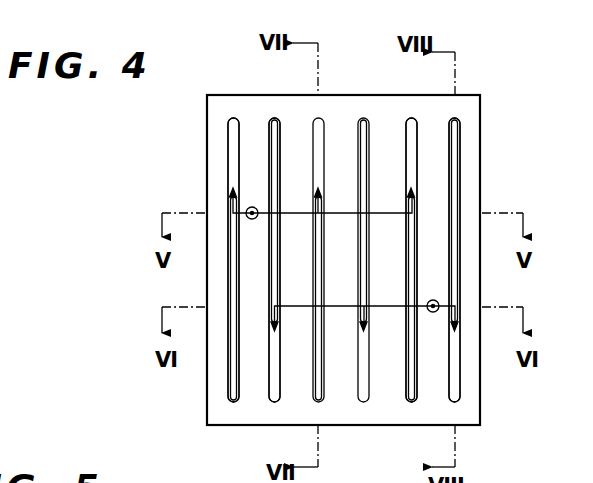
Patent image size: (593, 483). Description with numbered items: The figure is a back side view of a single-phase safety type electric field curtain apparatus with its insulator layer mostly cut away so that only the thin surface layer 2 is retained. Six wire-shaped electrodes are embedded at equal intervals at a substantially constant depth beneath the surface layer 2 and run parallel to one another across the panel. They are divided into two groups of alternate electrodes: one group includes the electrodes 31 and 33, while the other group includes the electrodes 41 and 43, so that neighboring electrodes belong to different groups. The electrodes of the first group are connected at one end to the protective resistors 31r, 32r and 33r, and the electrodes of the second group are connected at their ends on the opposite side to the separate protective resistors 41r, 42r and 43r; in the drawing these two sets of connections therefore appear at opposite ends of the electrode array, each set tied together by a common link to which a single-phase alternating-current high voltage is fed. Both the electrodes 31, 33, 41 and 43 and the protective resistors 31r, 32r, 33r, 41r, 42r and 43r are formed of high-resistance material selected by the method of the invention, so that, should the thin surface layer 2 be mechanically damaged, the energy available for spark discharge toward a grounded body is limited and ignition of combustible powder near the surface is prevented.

The surface layer 2 is at (342, 106).
The electrode 31 is at (455, 143).
The protective resistor 31r is at (460, 395).
The protective resistor 32r is at (363, 395).
The electrode 33 is at (270, 119).
The protective resistor 33r is at (270, 394).
The electrode 41 is at (415, 392).
The protective resistor 41r is at (410, 119).
The protective resistor 42r is at (318, 119).
The electrode 43 is at (230, 386).
The protective resistor 43r is at (228, 133).